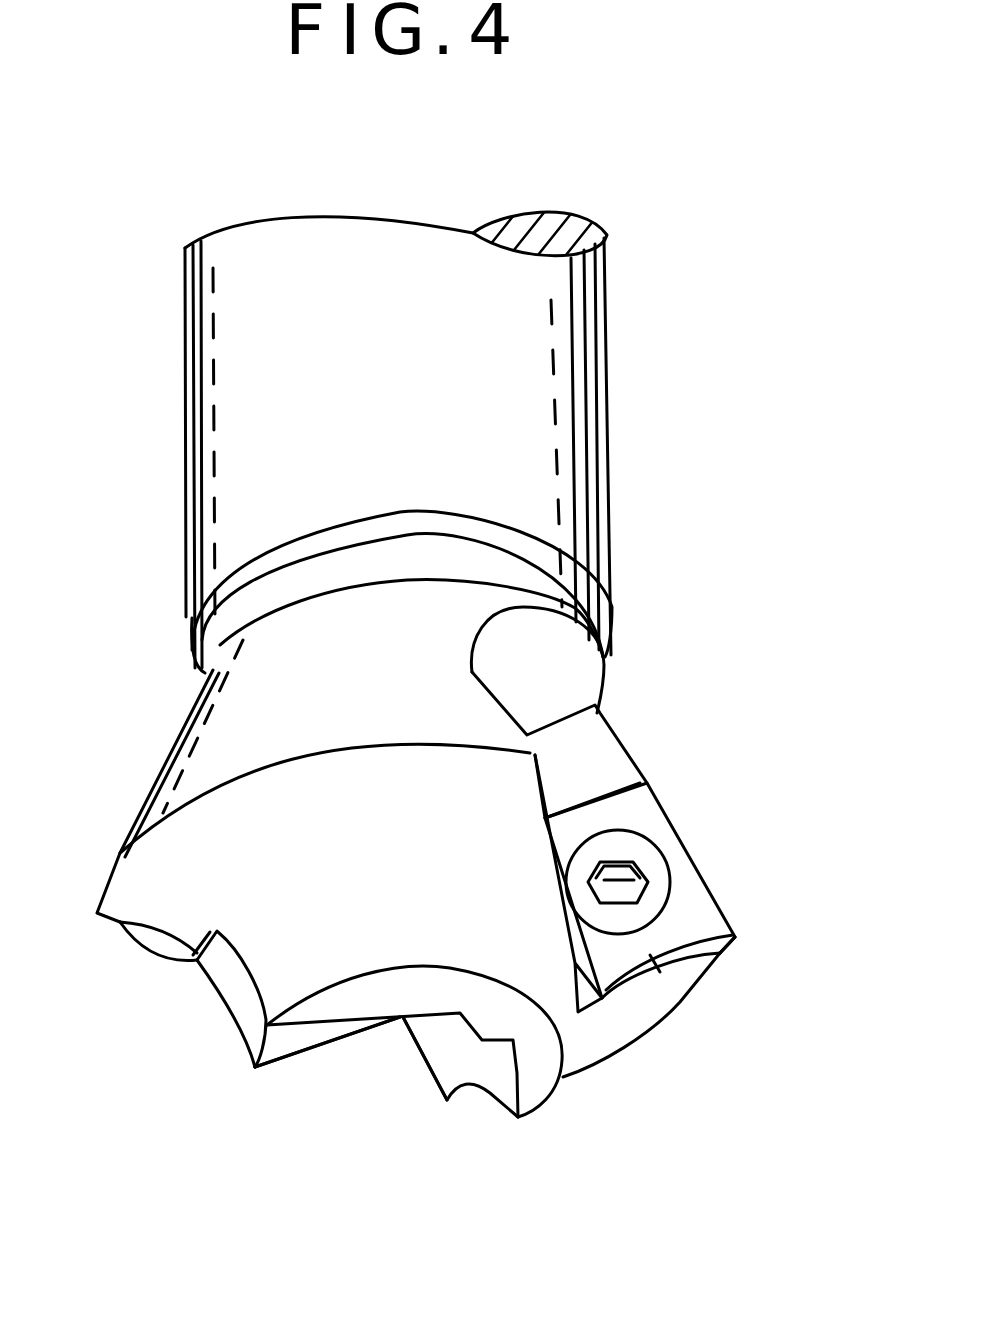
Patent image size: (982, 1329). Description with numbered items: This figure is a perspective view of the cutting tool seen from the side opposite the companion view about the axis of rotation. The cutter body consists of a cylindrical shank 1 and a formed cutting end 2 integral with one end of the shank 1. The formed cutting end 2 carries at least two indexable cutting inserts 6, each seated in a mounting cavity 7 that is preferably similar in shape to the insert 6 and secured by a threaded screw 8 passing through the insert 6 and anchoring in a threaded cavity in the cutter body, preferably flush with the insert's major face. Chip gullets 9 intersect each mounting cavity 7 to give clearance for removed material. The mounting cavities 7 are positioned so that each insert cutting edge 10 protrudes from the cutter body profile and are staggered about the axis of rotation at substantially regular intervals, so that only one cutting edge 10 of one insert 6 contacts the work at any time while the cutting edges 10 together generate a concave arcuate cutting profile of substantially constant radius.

The cylindrical shank 1 is at (422, 384).
The formed cutting end 2 is at (340, 698).
The indexable cutting insert 6 is at (737, 922).
The mounting cavity 7 is at (592, 777).
The threaded screw 8 is at (657, 855).
The chip gullet 9 is at (545, 668).
The insert cutting edge 10 is at (652, 953).